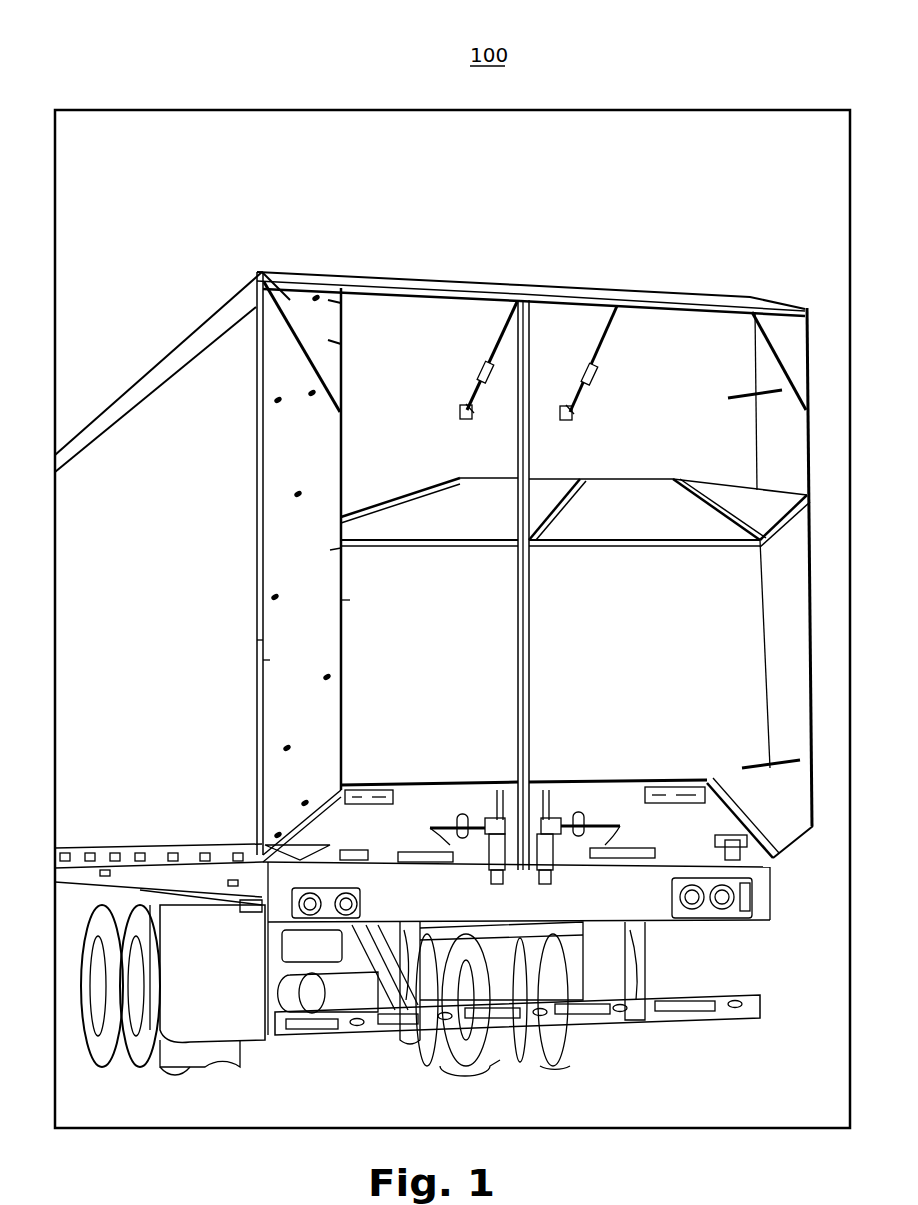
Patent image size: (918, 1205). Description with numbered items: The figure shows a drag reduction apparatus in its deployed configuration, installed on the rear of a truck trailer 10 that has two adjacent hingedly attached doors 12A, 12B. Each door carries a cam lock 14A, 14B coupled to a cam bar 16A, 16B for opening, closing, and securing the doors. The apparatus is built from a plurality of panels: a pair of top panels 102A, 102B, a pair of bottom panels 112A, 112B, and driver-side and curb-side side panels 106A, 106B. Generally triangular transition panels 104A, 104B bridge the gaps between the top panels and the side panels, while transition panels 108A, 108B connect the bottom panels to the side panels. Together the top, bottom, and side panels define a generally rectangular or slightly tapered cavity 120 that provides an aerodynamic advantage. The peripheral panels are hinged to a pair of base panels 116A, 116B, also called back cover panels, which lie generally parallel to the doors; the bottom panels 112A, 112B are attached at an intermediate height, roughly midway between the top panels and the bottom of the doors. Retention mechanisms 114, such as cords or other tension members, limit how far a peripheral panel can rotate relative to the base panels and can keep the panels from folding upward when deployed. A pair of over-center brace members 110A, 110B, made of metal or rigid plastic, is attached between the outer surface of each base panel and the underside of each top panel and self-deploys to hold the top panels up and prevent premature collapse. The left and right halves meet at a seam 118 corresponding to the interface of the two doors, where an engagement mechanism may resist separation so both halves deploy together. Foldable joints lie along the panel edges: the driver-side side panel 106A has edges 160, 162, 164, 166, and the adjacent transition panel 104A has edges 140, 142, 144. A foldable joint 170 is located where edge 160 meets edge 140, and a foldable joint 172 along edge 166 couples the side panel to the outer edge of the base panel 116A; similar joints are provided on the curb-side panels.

The truck trailer 10 is at (136, 617).
The door 12A is at (394, 836).
The door 12B is at (669, 836).
The cam lock 14A is at (452, 832).
The cam lock 14B is at (605, 832).
The cam bar 16A is at (492, 790).
The cam bar 16B is at (552, 790).
The top panel 102A is at (448, 286).
The top panel 102B is at (632, 290).
The transition panel 104A is at (290, 290).
The transition panel 104B is at (785, 325).
The side panel 106A is at (290, 435).
The side panel 106B is at (790, 635).
The transition panel 108A is at (375, 498).
The transition panel 108B is at (725, 495).
The over-center brace member 110A is at (495, 335).
The over-center brace member 110B is at (597, 340).
The bottom panel 112A is at (465, 515).
The bottom panel 112B is at (572, 512).
The retention mechanism 114 is at (748, 392).
The base panel 116A is at (456, 726).
The base panel 116B is at (671, 726).
The seam 118 is at (540, 640).
The cavity 120 is at (695, 325).
The edge 140 is at (345, 365).
The edge 142 is at (345, 330).
The edge 144 is at (335, 285).
The edge 160 is at (285, 310).
The edge 162 is at (345, 620).
The edge 164 is at (315, 840).
The edge 166 is at (265, 650).
The foldable joint 170 is at (262, 290).
The foldable joint 172 is at (258, 662).